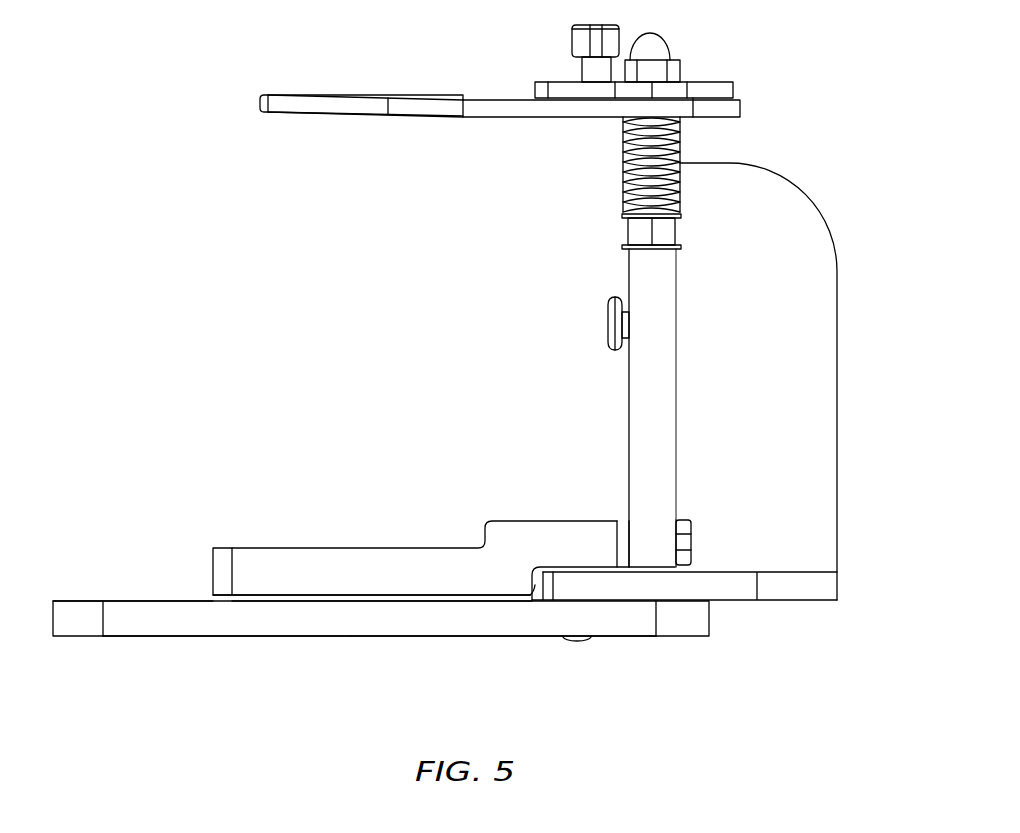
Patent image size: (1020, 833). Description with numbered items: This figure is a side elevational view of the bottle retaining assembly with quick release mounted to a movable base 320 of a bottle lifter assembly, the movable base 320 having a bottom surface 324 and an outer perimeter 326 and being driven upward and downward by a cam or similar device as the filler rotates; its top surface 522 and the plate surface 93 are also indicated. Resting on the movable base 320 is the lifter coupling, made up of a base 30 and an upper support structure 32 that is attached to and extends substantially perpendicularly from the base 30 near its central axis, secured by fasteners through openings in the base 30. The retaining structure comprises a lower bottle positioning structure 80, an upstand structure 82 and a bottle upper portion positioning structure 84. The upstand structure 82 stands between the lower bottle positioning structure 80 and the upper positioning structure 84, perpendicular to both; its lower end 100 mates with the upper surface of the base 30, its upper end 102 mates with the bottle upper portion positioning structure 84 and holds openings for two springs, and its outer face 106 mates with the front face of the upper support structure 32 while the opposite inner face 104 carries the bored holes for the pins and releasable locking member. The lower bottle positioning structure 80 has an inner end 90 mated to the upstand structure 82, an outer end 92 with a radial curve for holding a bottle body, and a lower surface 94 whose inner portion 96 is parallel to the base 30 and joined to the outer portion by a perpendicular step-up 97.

The bottle upper portion positioning structure 84 is at (388, 100).
The upper end 102 is at (683, 70).
The inner face 104 is at (630, 272).
The outer face 106 is at (676, 295).
The upstand structure 82 is at (629, 406).
The inner end 90 is at (603, 518).
The upper support structure 32 is at (826, 481).
The lower bottle positioning structure 80 is at (355, 560).
The outer end 92 is at (213, 565).
The step-up 97 is at (533, 590).
The inner portion 96 is at (585, 570).
The base 30 is at (795, 603).
The lower end 100 is at (654, 562).
The movable base 320 is at (78, 627).
The top surface 522 is at (128, 600).
The bottom surface 324 is at (283, 640).
The lower surface 94 is at (342, 600).
The upper surface of plate 93 is at (408, 602).
The outer perimeter 326 is at (492, 615).